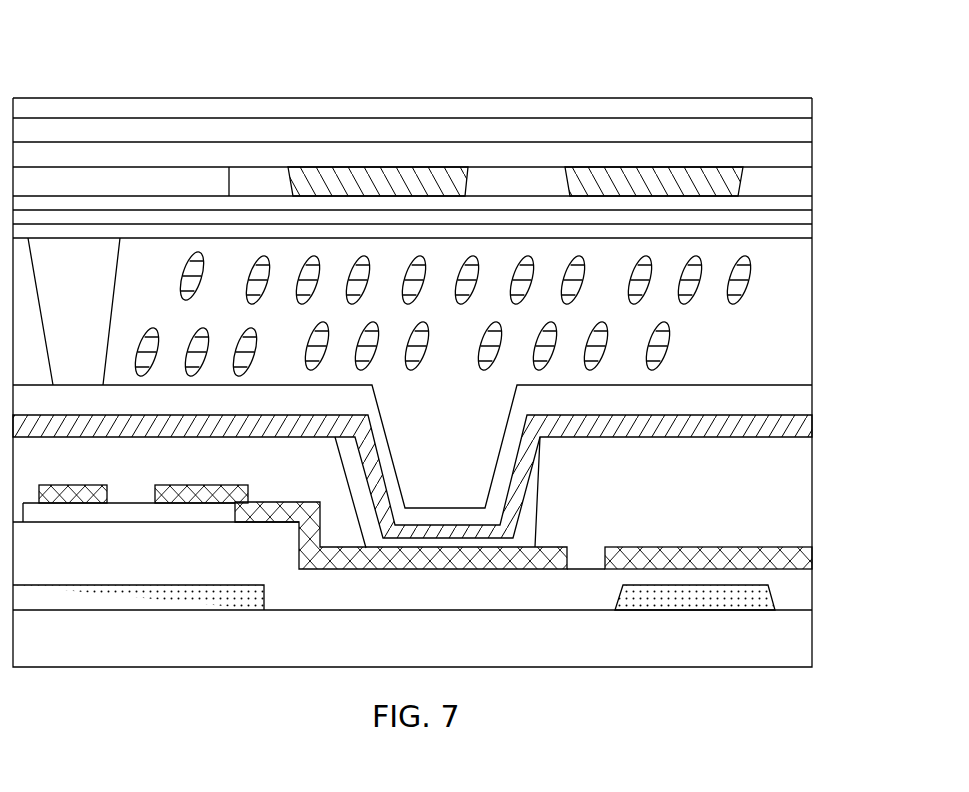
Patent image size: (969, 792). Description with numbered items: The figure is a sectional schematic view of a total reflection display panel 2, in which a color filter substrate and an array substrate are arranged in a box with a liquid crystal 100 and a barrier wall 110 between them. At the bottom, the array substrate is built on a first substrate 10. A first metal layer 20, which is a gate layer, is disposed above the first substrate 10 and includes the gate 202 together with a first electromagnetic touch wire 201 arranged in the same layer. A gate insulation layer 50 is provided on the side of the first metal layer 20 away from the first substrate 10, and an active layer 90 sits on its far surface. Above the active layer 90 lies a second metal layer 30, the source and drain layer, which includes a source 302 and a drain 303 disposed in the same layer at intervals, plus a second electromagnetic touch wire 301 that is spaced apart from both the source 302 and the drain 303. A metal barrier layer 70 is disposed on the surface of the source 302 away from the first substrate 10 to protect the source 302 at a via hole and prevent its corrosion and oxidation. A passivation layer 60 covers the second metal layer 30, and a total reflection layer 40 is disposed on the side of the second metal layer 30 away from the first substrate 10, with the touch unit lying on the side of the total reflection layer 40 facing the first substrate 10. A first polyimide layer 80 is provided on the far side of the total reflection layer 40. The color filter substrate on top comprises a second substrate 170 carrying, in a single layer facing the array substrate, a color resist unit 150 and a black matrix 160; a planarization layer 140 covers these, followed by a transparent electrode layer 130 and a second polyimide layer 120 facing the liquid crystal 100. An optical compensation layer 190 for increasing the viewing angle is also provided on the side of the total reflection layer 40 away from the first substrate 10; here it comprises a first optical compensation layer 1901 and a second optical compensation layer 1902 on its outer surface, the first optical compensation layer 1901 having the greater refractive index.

The total reflection display panel 2 is at (191, 47).
The first substrate 10 is at (802, 652).
The first metal layer 20 is at (466, 586).
The first electromagnetic touch wire 201 is at (760, 603).
The gate 202 is at (240, 598).
The second metal layer 30 is at (466, 523).
The second electromagnetic touch wire 301 is at (767, 555).
The source 302 is at (567, 547).
The drain 303 is at (87, 500).
The total reflection layer 40 is at (727, 423).
The gate insulation layer 50 is at (21, 543).
The passivation layer 60 is at (755, 450).
The metal barrier layer 70 is at (542, 473).
The first polyimide layer 80 is at (740, 395).
The active layer 90 is at (51, 518).
The liquid crystal 100 is at (737, 282).
The barrier wall 110 is at (67, 362).
The second polyimide layer 120 is at (797, 233).
The transparent electrode layer 130 is at (797, 217).
The planarization layer 140 is at (797, 203).
The color resist unit 150 is at (728, 185).
The black matrix 160 is at (527, 191).
The second substrate 170 is at (750, 150).
The optical compensation layer 190 is at (473, 103).
The first optical compensation layer 1901 is at (755, 132).
The second optical compensation layer 1902 is at (767, 108).